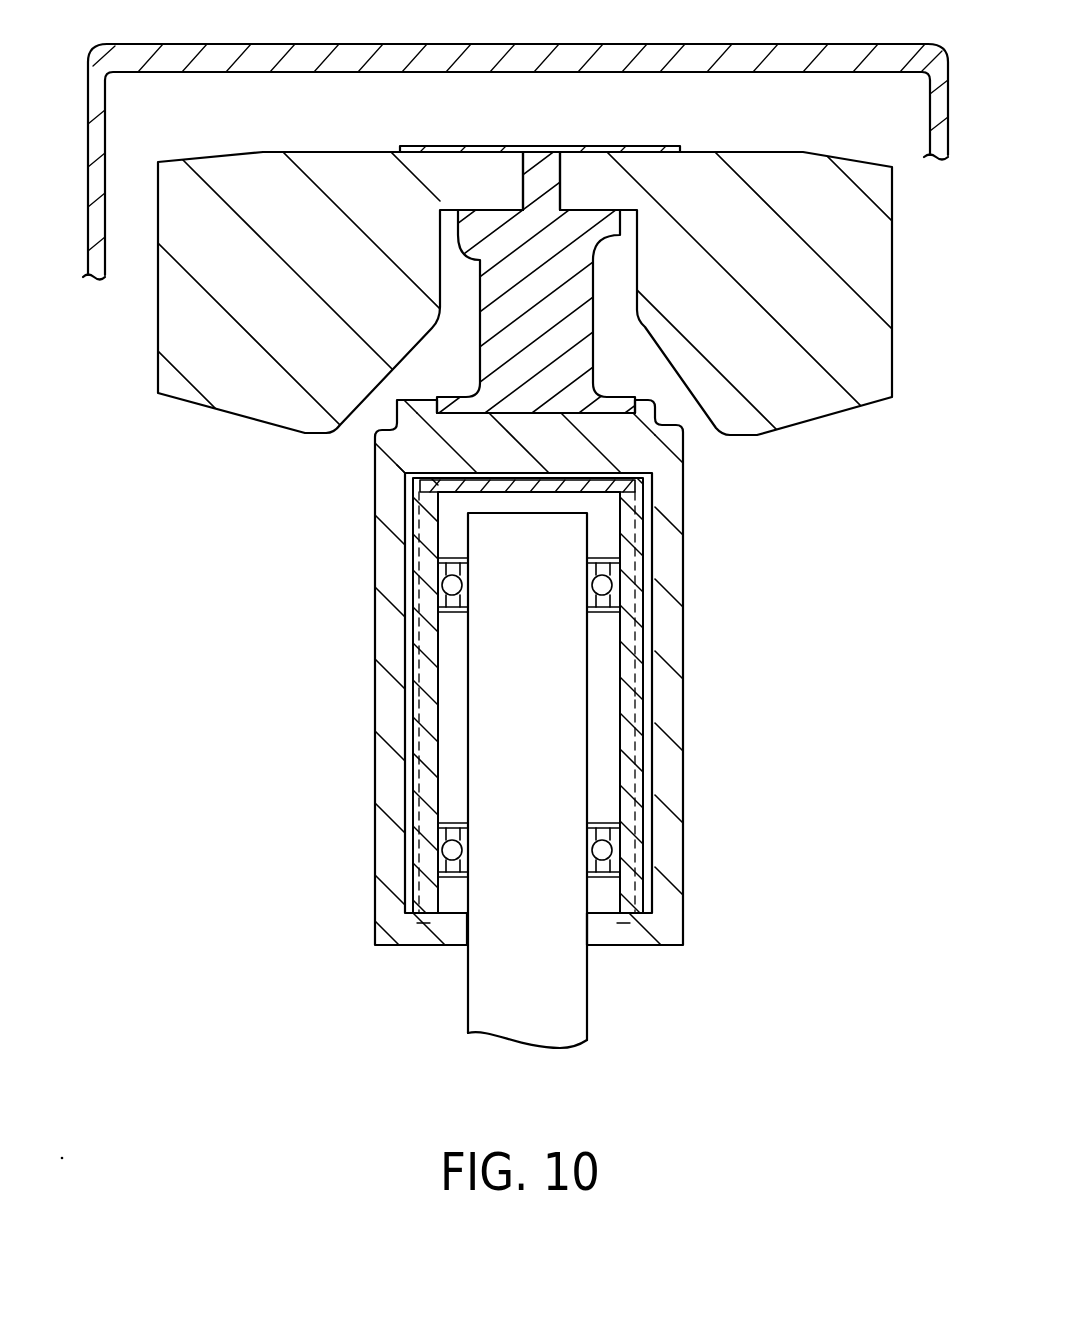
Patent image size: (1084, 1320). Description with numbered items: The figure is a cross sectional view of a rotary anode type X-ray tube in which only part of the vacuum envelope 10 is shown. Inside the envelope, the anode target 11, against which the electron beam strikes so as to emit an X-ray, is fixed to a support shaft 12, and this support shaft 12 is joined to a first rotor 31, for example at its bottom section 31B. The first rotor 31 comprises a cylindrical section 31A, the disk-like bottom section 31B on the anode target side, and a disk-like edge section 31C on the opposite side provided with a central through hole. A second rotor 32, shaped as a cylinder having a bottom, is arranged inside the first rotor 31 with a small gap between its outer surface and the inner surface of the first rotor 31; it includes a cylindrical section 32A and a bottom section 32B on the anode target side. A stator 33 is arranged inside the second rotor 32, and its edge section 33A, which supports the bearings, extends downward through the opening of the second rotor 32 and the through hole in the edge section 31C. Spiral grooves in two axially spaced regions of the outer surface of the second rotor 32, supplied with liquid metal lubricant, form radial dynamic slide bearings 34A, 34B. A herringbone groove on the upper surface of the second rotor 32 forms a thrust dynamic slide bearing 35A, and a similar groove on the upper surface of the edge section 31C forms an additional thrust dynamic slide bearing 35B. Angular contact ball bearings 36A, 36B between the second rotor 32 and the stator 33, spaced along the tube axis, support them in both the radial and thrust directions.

The vacuum envelope 10 is at (868, 45).
The anode target 11 is at (878, 285).
The support shaft 12 is at (570, 278).
The first rotor 31 is at (582, 685).
The cylindrical section 31A is at (665, 622).
The bottom section 31B is at (628, 450).
The edge section 31C is at (430, 947).
The second rotor 32 is at (582, 669).
The cylindrical section 32A is at (630, 705).
The bottom section 32B is at (467, 482).
The stator 33 is at (600, 804).
The edge section 33A is at (550, 1025).
The radial dynamic slide bearing 34A is at (413, 585).
The radial dynamic slide bearing 34B is at (438, 852).
The thrust dynamic slide bearing 35A is at (413, 503).
The additional thrust dynamic slide bearing 35B is at (430, 922).
The ball bearing 36A is at (612, 583).
The ball bearing 36B is at (605, 852).